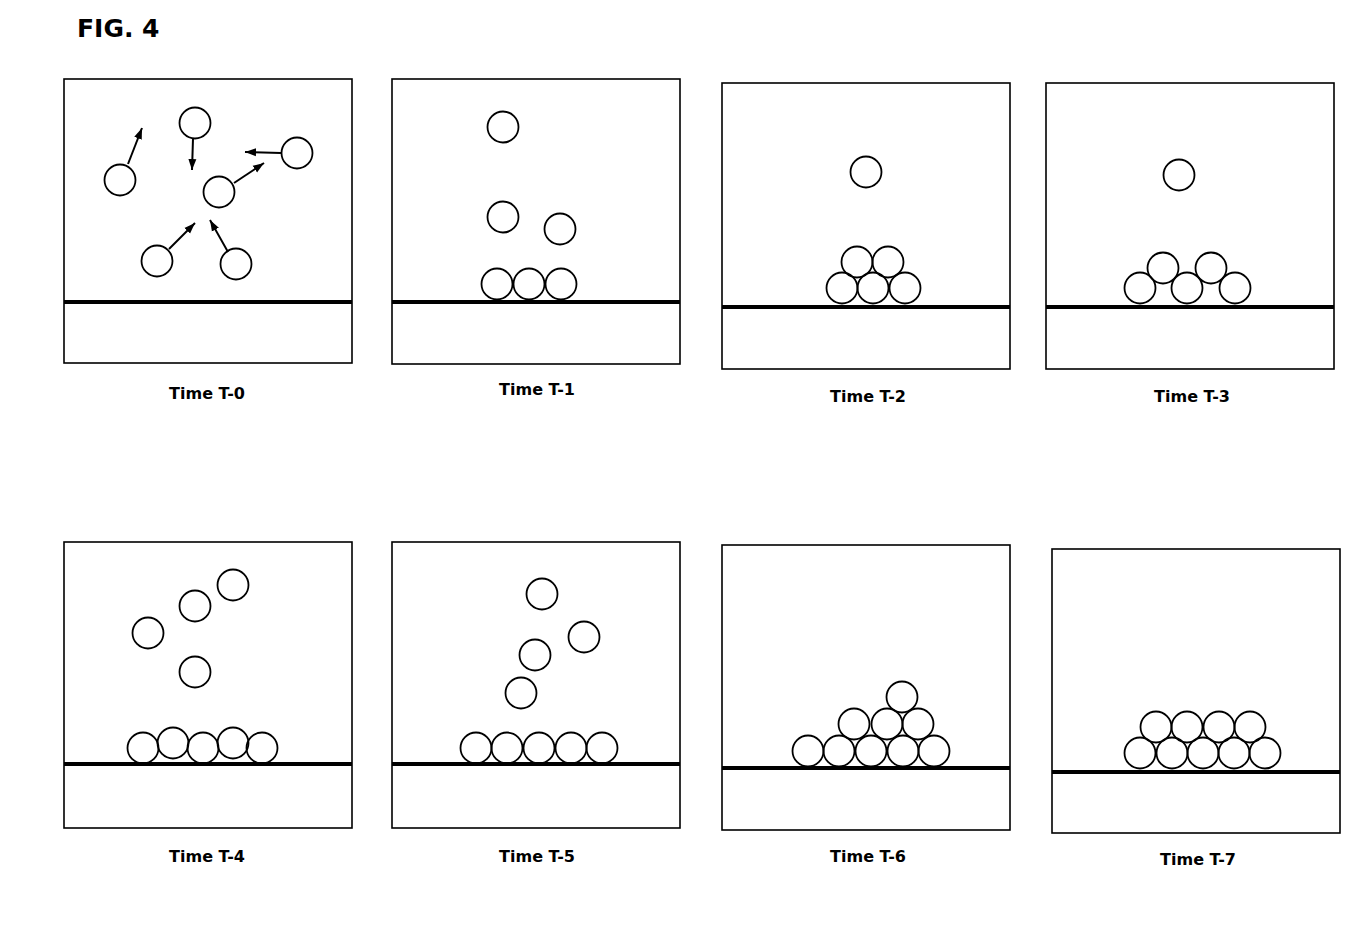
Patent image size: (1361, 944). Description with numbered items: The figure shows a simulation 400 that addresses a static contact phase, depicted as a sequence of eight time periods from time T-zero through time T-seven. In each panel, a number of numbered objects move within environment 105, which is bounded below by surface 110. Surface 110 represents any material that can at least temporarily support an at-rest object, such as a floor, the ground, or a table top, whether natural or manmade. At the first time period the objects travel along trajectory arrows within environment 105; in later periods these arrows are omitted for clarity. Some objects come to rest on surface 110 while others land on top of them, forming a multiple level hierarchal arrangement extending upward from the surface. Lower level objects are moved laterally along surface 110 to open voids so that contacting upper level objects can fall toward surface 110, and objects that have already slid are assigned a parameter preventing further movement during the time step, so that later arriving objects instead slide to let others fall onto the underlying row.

The simulation 400 is at (260, 72).
The environment 105 is at (109, 112).
The surface 110 is at (243, 304).